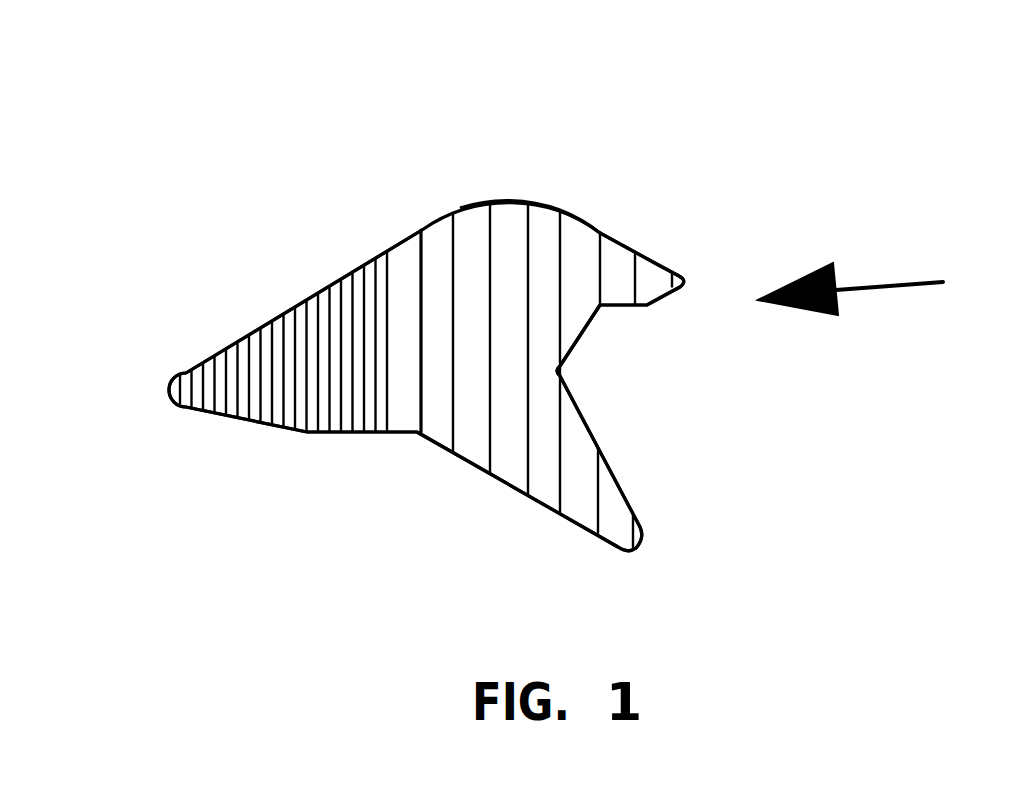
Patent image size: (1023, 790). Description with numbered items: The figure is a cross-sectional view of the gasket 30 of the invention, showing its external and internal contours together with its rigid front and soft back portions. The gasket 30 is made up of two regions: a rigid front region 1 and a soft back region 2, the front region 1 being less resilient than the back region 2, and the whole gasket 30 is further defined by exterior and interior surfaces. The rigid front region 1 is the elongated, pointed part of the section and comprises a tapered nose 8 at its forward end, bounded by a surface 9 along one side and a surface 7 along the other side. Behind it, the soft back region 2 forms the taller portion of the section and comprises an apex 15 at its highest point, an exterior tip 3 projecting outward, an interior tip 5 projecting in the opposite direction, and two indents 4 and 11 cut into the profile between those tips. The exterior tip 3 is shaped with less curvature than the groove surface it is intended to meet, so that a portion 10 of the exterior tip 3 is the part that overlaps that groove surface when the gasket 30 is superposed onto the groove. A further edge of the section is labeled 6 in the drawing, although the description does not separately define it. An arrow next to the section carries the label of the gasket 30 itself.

The rigid front region 1 is at (272, 370).
The soft back region 2 is at (512, 267).
The apex 15 is at (530, 202).
The exterior tip 3 is at (615, 277).
The portion of exterior tip 10 is at (693, 282).
The indent 4 is at (605, 317).
The indent 11 is at (565, 373).
The interior tip 5 is at (608, 515).
The lower edge surface 6 is at (540, 505).
The surface 7 is at (368, 434).
The tapered nose 8 is at (232, 422).
The surface 9 is at (440, 228).
The gasket 30 is at (890, 275).